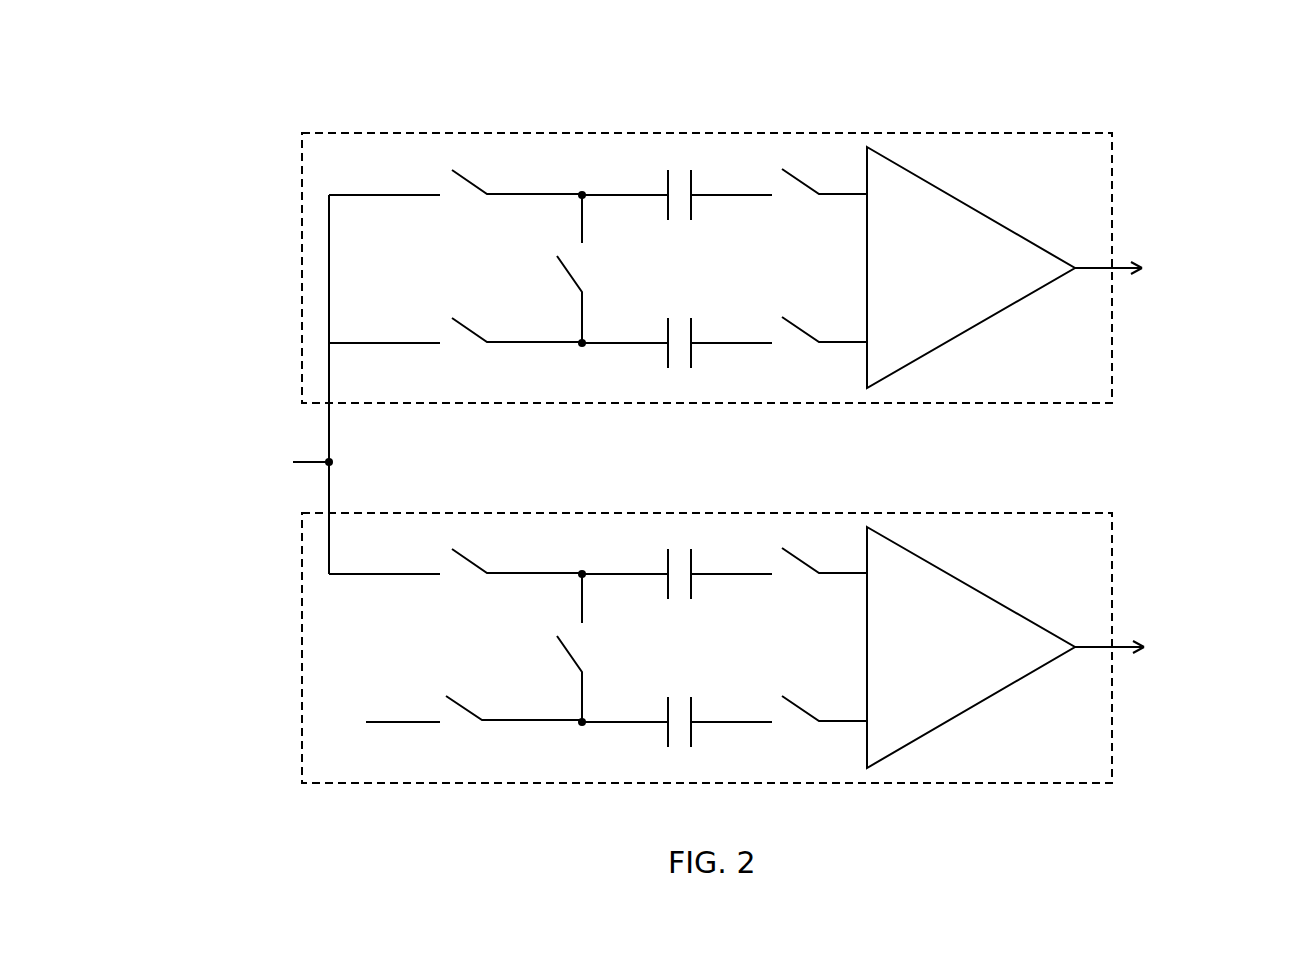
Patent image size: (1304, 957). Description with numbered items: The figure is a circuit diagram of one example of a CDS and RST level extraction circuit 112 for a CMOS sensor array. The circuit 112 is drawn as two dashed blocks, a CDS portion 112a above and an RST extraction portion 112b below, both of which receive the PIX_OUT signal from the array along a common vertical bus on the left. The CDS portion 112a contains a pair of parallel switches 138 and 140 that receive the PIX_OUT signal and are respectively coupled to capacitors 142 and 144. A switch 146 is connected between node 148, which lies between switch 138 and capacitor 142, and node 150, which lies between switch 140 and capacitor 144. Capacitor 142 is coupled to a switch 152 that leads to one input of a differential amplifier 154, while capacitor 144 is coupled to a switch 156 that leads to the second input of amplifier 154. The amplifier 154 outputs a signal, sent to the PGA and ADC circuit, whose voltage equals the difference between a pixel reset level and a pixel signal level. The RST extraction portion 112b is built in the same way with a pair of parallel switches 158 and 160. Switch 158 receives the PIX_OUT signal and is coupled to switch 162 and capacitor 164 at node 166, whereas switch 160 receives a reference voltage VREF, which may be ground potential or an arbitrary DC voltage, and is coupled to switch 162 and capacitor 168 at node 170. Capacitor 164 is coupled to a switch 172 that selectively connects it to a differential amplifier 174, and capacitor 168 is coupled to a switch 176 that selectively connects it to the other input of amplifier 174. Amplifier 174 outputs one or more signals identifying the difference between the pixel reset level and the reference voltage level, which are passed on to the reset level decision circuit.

The CDS and RST level extraction circuit 112 is at (1210, 103).
The CDS portion 112a is at (1112, 181).
The RST extraction portion 112b is at (1112, 559).
The switch 138 is at (514, 201).
The switch 140 is at (514, 349).
The capacitor 142 is at (679, 209).
The capacitor 144 is at (679, 356).
The switch 146 is at (598, 269).
The node 148 is at (582, 195).
The node 150 is at (582, 343).
The switch 152 is at (822, 200).
The differential amplifier 154 is at (962, 198).
The switch 156 is at (822, 347).
The switch 158 is at (514, 581).
The switch 160 is at (514, 726).
The switch 162 is at (598, 648).
The capacitor 164 is at (679, 588).
The node 166 is at (582, 574).
The capacitor 168 is at (679, 736).
The node 170 is at (582, 722).
The switch 172 is at (822, 580).
The differential amplifier 174 is at (962, 577).
The switch 176 is at (822, 726).